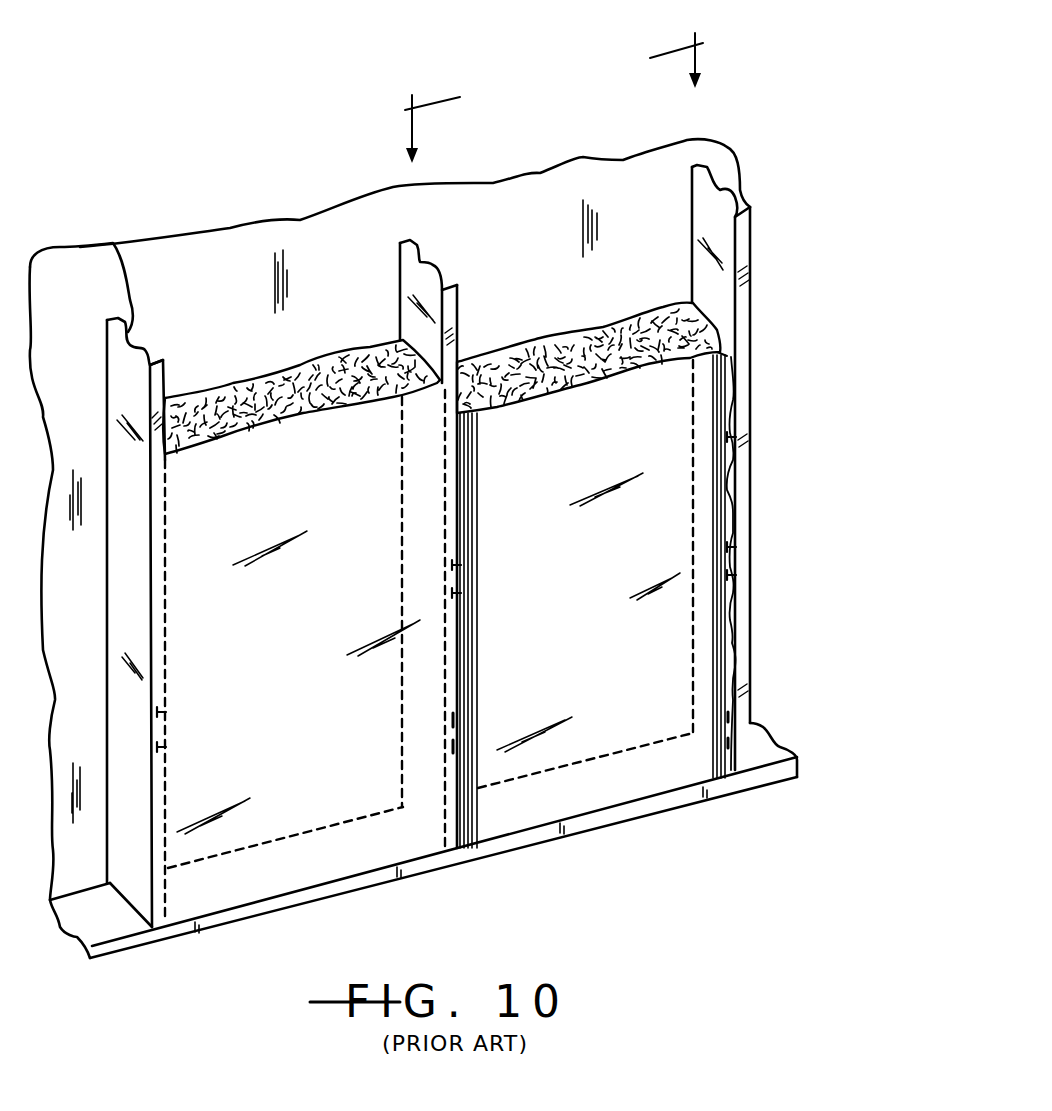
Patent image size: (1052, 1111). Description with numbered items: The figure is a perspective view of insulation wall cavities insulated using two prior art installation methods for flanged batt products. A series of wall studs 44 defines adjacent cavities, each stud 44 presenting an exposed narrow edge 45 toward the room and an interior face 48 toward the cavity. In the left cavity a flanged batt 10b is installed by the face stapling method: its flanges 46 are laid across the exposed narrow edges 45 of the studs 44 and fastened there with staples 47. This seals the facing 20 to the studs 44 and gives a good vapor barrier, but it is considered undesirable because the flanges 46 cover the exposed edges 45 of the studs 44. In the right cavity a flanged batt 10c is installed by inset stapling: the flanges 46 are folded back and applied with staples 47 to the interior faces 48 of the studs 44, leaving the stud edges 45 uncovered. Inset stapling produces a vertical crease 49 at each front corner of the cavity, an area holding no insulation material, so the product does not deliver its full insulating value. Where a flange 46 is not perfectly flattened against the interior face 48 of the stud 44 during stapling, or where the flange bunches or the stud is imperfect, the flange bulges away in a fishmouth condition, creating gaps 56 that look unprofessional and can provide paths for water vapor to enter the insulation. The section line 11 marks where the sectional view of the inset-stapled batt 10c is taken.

The flanged batt 10b is at (227, 388).
The flanged batt 10c is at (538, 330).
The section line 11 is at (551, 89).
The facing 20 is at (302, 400).
The wall stud 44 is at (125, 338).
The exposed narrow edge 45 is at (158, 380).
The flange 46 is at (150, 568).
The staple 47 is at (157, 747).
The interior face 48 is at (160, 353).
The vertical crease 49 is at (720, 352).
The gap 56 is at (733, 490).